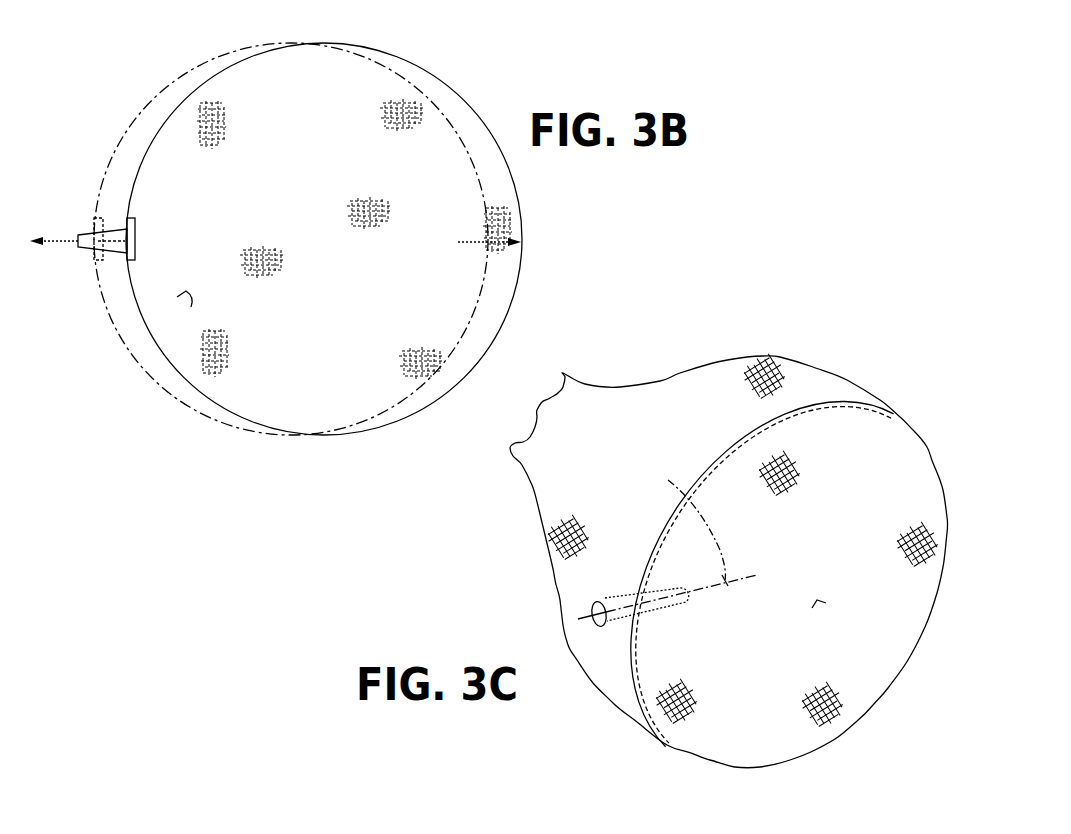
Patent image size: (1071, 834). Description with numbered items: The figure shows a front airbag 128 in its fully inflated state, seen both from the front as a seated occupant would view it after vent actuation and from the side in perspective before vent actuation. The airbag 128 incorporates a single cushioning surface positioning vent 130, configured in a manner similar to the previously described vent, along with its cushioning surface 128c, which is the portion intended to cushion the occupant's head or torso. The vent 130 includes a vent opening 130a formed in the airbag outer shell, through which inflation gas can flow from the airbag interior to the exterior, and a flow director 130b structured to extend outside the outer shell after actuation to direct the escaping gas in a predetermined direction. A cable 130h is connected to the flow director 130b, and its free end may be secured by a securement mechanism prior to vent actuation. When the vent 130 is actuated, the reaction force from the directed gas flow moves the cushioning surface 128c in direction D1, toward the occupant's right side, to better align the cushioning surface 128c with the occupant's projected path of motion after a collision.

In FIG. 3B, the airbag 128 is at (180, 166).
In FIG. 3C, the airbag 128 is at (905, 408).
In FIG. 3B, the cushioning surface 128c is at (183, 293).
In FIG. 3C, the cushioning surface 128c is at (822, 604).
In FIG. 3B, the cushioning surface positioning vent 130 is at (113, 250).
In FIG. 3C, the cushioning surface positioning vent 130 is at (597, 588).
In FIG. 3C, the vent opening 130a is at (592, 615).
In FIG. 3C, the flow director 130b is at (622, 600).
In FIG. 3C, the cable 130h is at (668, 480).
In FIG. 3B, the direction of cushioning surface movement D1 is at (478, 243).